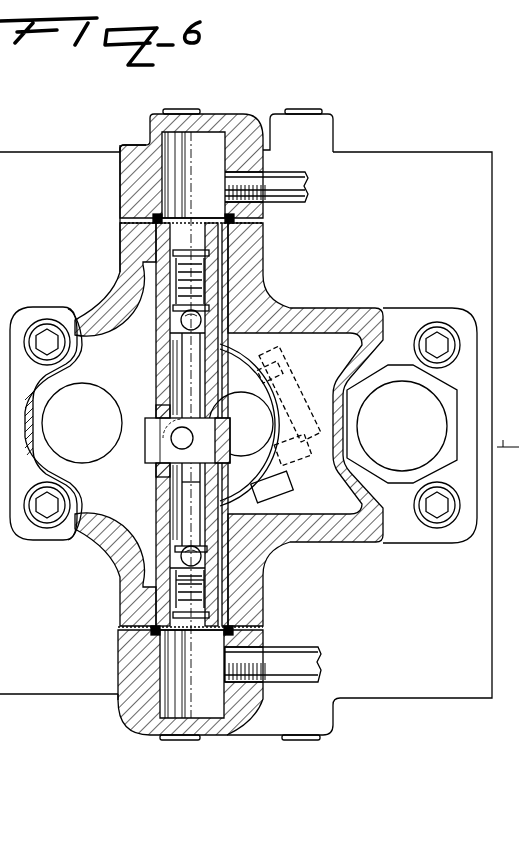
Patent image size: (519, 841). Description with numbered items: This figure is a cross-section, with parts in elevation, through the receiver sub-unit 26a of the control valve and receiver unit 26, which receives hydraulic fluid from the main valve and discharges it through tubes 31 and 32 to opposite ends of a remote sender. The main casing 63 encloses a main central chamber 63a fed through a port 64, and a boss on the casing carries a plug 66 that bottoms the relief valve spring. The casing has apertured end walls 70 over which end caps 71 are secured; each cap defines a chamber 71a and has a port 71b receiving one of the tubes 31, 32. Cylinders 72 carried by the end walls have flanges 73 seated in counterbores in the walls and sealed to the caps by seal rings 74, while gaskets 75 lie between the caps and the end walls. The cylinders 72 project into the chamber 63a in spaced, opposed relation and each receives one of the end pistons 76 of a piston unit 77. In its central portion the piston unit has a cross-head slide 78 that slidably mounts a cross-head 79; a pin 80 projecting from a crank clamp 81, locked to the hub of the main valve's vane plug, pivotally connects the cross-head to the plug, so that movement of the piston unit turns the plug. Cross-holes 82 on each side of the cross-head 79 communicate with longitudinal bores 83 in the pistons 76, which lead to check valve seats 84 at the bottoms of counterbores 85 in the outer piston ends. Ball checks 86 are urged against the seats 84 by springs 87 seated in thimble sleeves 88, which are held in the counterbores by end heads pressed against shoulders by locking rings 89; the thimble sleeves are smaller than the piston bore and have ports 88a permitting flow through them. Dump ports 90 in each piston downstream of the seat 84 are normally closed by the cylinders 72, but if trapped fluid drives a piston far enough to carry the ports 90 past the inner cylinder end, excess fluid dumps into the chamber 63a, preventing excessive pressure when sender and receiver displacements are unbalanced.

The control valve and receiver unit 26 is at (381, 152).
The receiver sub-unit 26a is at (140, 172).
The tube 31 is at (318, 660).
The tube 32 is at (305, 183).
The main casing 63 is at (321, 324).
The main central chamber 63a is at (97, 350).
The port 64 is at (80, 450).
The plug 66 is at (393, 393).
The apertured end walls 70 is at (240, 240).
The end caps 71 is at (232, 128).
The chambers 71a is at (200, 145).
The ports 71b is at (265, 172).
The cylinders 72 is at (150, 300).
The flanges 73 is at (153, 219).
The seal rings 74 is at (236, 220).
The gaskets 75 is at (137, 200).
The end pistons 76 is at (172, 362).
The piston unit 77 is at (168, 413).
The cross-head slide 78 is at (185, 482).
The cross-head 79 is at (150, 440).
The pin 80 is at (188, 438).
The crank clamp 81 is at (260, 387).
The cross-holes 82 is at (206, 394).
The longitudinal bores 83 is at (187, 402).
The check valve seats 84 is at (208, 352).
The counterbores 85 is at (232, 298).
The ball checks 86 is at (215, 322).
The springs 87 is at (192, 292).
The thimble sleeves 88 is at (178, 273).
The ports 88a is at (218, 579).
The locking rings 89 is at (182, 284).
The dump ports 90 is at (170, 342).